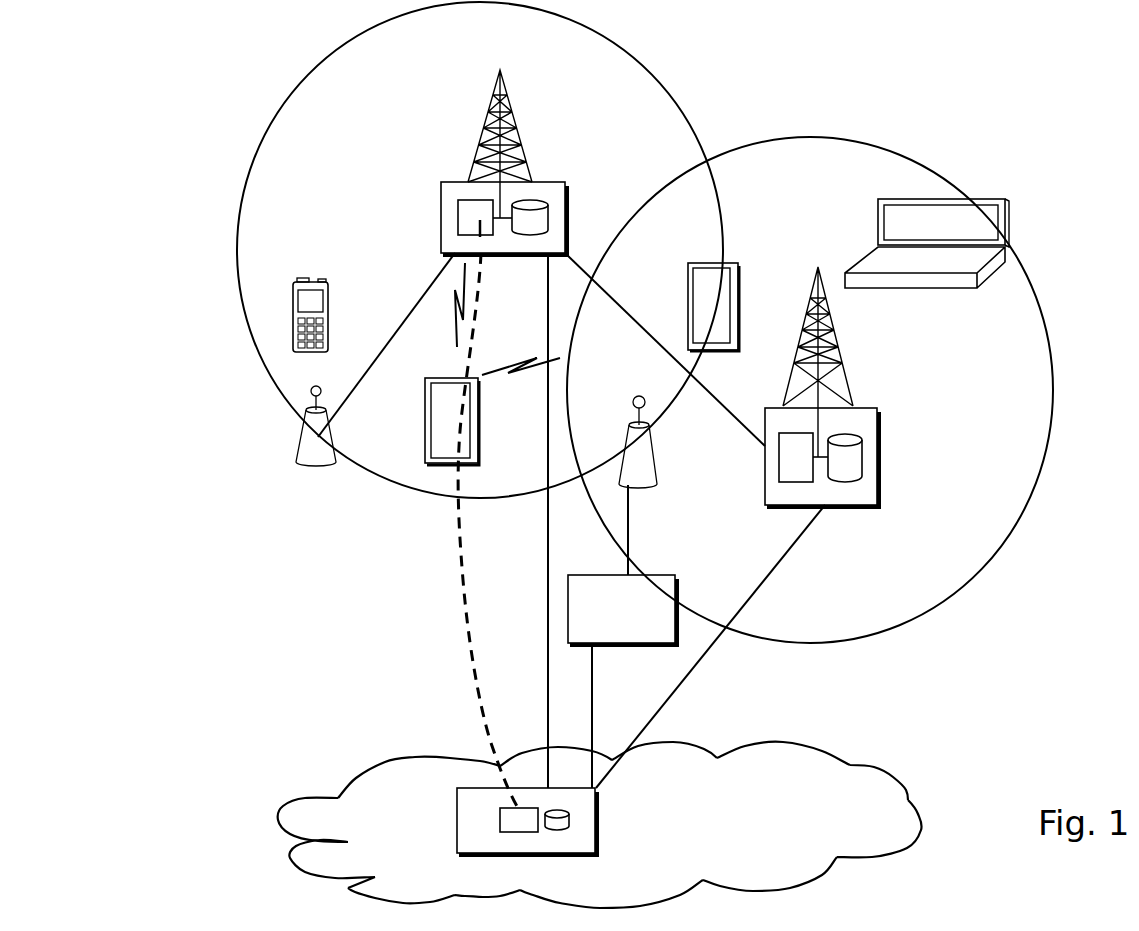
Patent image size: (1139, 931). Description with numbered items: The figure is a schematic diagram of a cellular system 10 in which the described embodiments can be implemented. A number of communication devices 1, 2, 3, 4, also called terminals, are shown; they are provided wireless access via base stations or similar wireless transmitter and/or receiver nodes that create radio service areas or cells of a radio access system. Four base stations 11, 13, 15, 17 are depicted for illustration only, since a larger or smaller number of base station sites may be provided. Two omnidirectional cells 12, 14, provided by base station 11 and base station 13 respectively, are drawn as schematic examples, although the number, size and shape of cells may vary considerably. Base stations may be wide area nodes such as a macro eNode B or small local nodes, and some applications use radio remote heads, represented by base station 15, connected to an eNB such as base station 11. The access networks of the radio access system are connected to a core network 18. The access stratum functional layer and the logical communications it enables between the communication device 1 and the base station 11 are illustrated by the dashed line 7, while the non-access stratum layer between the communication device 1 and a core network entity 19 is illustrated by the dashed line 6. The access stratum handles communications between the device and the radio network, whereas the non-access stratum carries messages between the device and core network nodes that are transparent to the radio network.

The communication device 1 is at (443, 462).
The communication device 2 is at (293, 335).
The communication device 3 is at (712, 283).
The communication device 4 is at (998, 215).
The dashed line 6 is at (458, 557).
The dashed line 7 is at (483, 307).
The communication system 10 is at (206, 173).
The base station 11 is at (440, 202).
The omnidirectional cell 12 is at (238, 263).
The base station 13 is at (862, 487).
The omnidirectional cell 14 is at (1030, 278).
The radio remote head 15 is at (305, 420).
The base station 17 is at (647, 477).
The core network 18 is at (402, 778).
The core network entity 19 is at (473, 803).